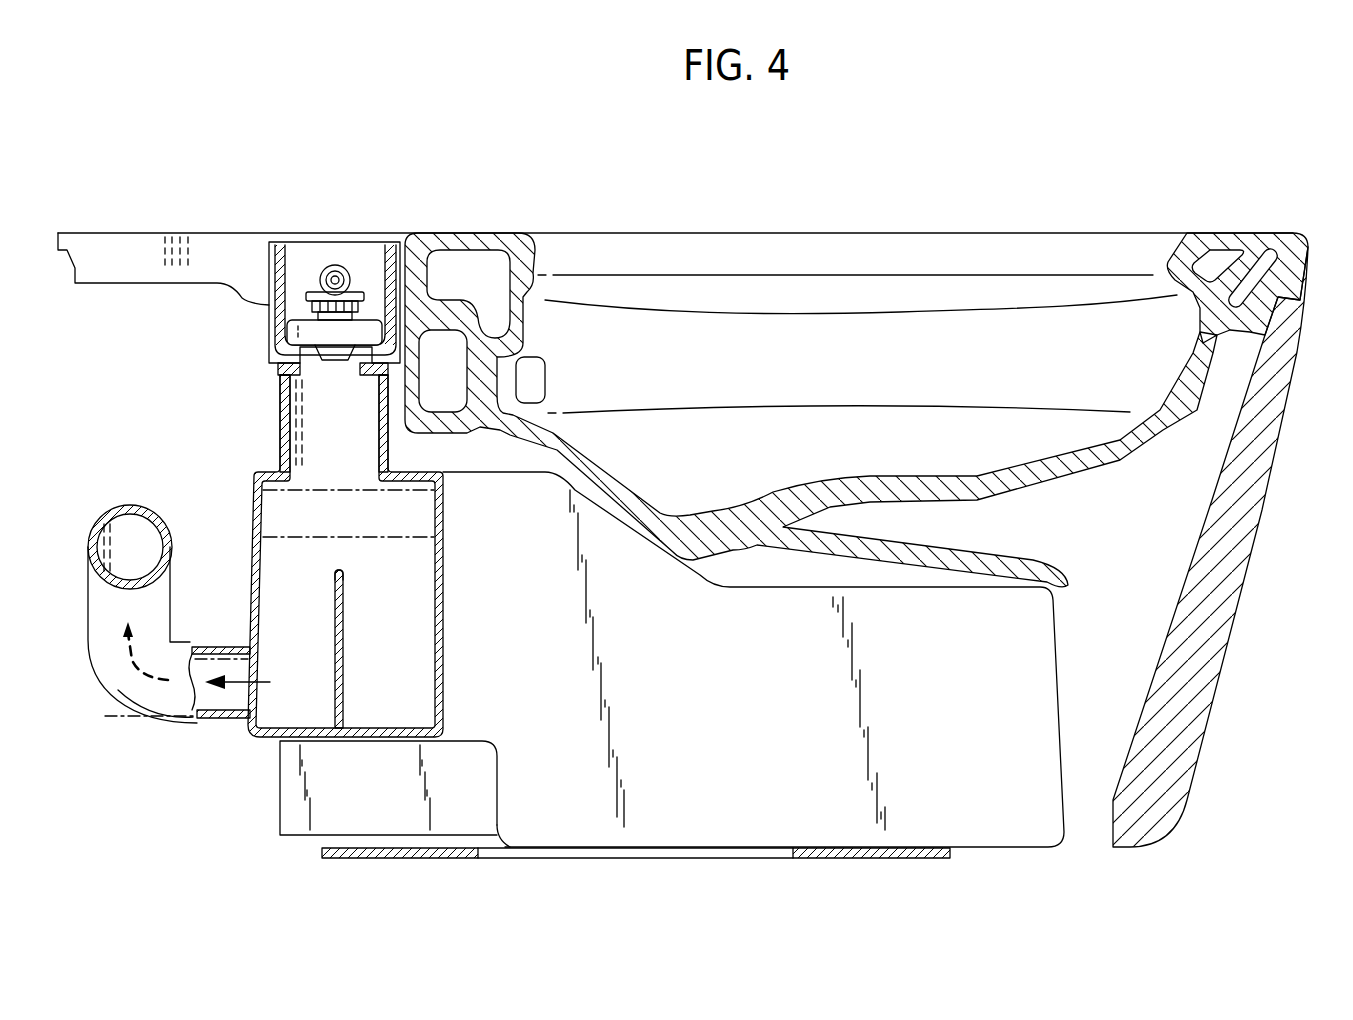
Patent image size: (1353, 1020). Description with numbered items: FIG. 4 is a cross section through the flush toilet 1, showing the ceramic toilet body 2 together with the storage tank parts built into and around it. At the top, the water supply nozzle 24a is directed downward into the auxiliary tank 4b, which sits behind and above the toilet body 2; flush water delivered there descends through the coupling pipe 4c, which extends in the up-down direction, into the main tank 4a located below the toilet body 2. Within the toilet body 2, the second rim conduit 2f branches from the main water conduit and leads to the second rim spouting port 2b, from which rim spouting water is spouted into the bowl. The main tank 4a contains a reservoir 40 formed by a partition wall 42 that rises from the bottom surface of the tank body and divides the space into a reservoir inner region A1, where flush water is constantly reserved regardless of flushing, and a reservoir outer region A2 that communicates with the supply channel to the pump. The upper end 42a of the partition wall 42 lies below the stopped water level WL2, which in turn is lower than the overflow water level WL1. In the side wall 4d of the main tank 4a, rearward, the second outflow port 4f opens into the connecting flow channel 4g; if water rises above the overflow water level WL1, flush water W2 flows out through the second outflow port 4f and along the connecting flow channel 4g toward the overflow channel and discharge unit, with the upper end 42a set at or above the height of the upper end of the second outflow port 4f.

The flush toilet 1 is at (795, 200).
The toilet body 2 is at (1265, 597).
The second rim spouting port 2b is at (532, 382).
The second rim conduit 2f is at (443, 373).
The main tank 4a is at (983, 797).
The auxiliary tank 4b is at (258, 337).
The coupling pipe 4c is at (323, 414).
The side wall 4d is at (250, 568).
The second outflow port 4f is at (253, 673).
The connecting flow channel 4g is at (130, 545).
The water supply nozzle 24a is at (346, 272).
The reservoir 40 is at (296, 690).
The partition wall 42 is at (335, 603).
The upper end of partition wall 42a is at (342, 572).
The reservoir inner region A1 is at (314, 657).
The reservoir outer region A2 is at (411, 657).
The overflow water level WL1 is at (403, 490).
The stopped water level WL2 is at (410, 537).
The flush water W2 is at (143, 690).